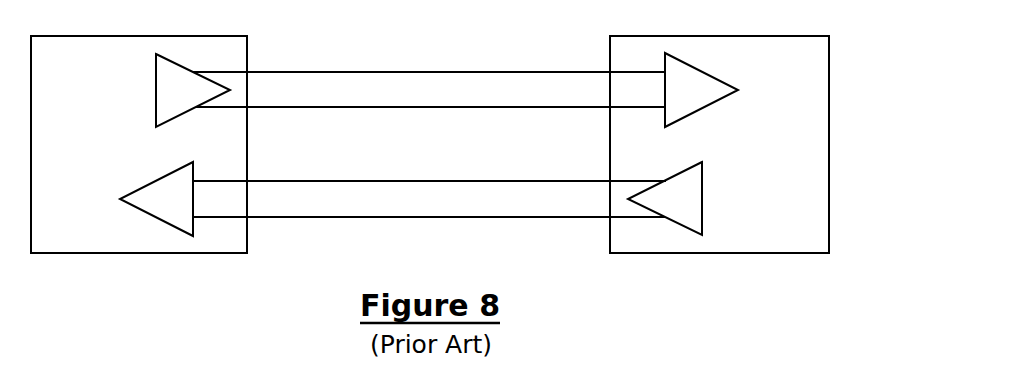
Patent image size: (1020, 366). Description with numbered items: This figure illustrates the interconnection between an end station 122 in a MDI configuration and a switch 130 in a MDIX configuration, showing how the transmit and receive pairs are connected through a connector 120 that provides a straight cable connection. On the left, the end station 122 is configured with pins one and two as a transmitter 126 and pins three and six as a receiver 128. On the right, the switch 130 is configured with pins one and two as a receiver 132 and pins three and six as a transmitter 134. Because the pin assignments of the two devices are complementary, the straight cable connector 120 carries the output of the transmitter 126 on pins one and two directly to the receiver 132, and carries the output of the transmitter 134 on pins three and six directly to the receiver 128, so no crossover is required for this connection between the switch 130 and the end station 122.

The RJ-45 connector 120 is at (422, 56).
The end station 122 is at (248, 50).
The transmitter 126 is at (156, 85).
The receiver 128 is at (140, 210).
The switch 130 is at (830, 145).
The receiver 132 is at (703, 67).
The transmitter 134 is at (702, 198).